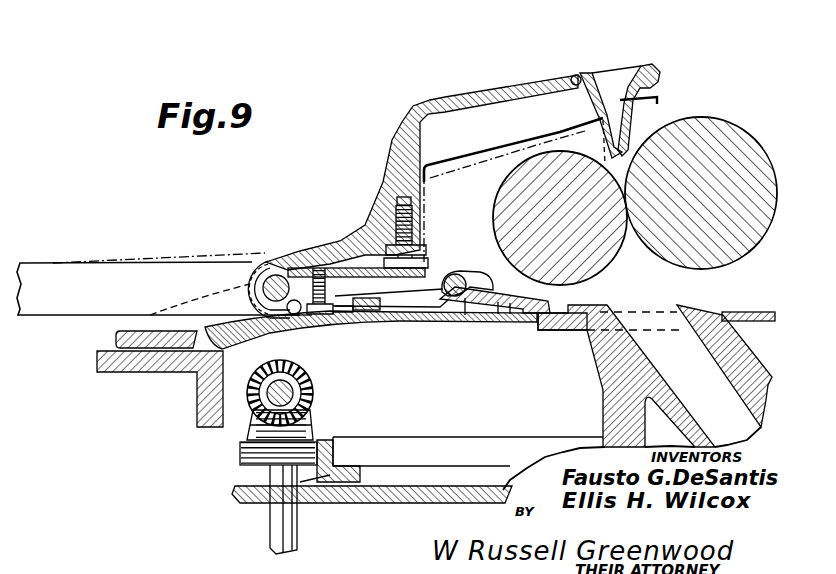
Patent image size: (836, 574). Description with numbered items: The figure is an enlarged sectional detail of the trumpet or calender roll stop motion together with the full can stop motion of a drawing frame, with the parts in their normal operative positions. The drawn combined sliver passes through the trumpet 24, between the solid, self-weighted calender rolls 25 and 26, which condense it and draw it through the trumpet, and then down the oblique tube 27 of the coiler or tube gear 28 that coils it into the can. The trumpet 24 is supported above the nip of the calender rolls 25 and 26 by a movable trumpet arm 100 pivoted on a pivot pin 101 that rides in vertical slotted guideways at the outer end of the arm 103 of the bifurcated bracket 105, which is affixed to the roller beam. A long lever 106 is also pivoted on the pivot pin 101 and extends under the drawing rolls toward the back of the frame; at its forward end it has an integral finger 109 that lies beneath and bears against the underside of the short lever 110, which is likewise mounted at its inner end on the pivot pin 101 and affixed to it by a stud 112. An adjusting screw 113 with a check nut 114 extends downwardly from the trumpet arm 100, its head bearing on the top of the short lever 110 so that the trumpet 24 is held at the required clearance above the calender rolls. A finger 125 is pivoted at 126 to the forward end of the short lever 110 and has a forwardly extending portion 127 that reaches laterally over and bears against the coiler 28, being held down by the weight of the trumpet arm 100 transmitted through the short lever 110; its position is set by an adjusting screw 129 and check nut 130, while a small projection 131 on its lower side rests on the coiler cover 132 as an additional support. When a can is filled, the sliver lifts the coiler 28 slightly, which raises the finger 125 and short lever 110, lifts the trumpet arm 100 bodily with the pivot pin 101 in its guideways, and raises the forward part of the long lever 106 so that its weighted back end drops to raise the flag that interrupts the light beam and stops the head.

The trumpet arm 100 is at (497, 92).
The trumpet 24 is at (620, 67).
The calender roll 25 is at (497, 184).
The calender roll 26 is at (719, 117).
The oblique tube 27 is at (740, 347).
The coiler or tube gear 28 is at (440, 427).
The pivot pin 101 is at (281, 290).
The arm of bifurcated bracket 103 is at (187, 372).
The bifurcated bracket 105 is at (115, 345).
The long lever 106 is at (85, 260).
The integral finger 109 is at (398, 313).
The short lever 110 is at (362, 268).
The stud 112 is at (292, 315).
The adjusting screw 113 is at (430, 263).
The check nut 114 is at (423, 246).
The finger 125 is at (474, 323).
The pivot 126 is at (457, 292).
The forwardly extending portion 127 is at (553, 300).
The adjusting screw 129 is at (348, 313).
The check nut 130 is at (320, 316).
The small projection 131 is at (512, 323).
The coiler cover 132 is at (360, 312).